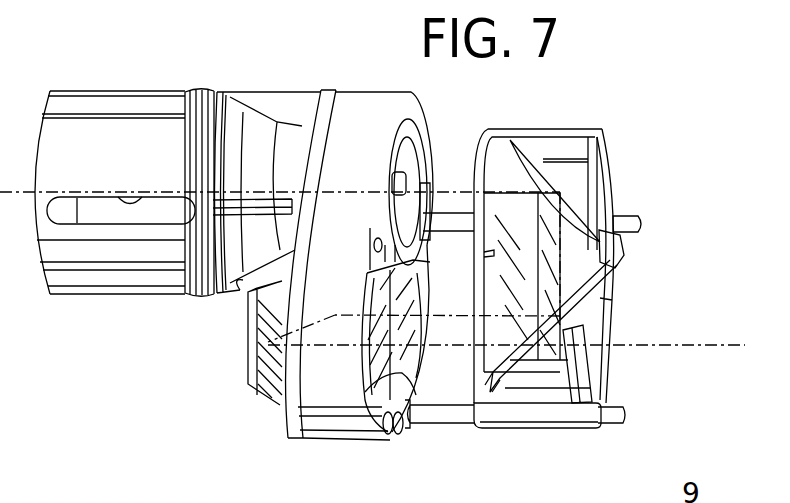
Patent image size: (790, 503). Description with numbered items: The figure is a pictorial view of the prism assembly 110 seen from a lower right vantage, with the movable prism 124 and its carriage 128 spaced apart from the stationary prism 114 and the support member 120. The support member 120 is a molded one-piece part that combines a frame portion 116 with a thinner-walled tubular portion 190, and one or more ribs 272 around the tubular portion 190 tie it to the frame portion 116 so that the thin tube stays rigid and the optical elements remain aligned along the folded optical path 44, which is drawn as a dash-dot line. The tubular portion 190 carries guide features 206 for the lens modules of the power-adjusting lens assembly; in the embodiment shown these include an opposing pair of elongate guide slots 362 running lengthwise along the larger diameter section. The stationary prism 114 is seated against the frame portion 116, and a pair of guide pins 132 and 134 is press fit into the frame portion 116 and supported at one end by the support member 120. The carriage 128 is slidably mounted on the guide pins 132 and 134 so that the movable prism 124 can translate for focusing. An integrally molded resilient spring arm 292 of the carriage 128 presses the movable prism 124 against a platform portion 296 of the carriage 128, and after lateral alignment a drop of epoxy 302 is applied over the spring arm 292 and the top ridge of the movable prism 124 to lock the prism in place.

The prism assembly 110 is at (652, 54).
The support member 120 is at (310, 70).
The ribs 272 is at (262, 199).
The guide features 206 is at (96, 180).
The guide slots 362 is at (132, 196).
The tubular portion 190 is at (107, 278).
The stationary prism 114 is at (258, 348).
The frame portion 116 is at (337, 423).
The guide pin 134 is at (450, 412).
The movable prism 124 is at (530, 162).
The spring arm 292 is at (602, 190).
The guide pin 132 is at (630, 217).
The epoxy 302 is at (613, 242).
The platform portion 296 is at (498, 387).
The carriage 128 is at (578, 426).
The folded optical path 44 is at (668, 340).